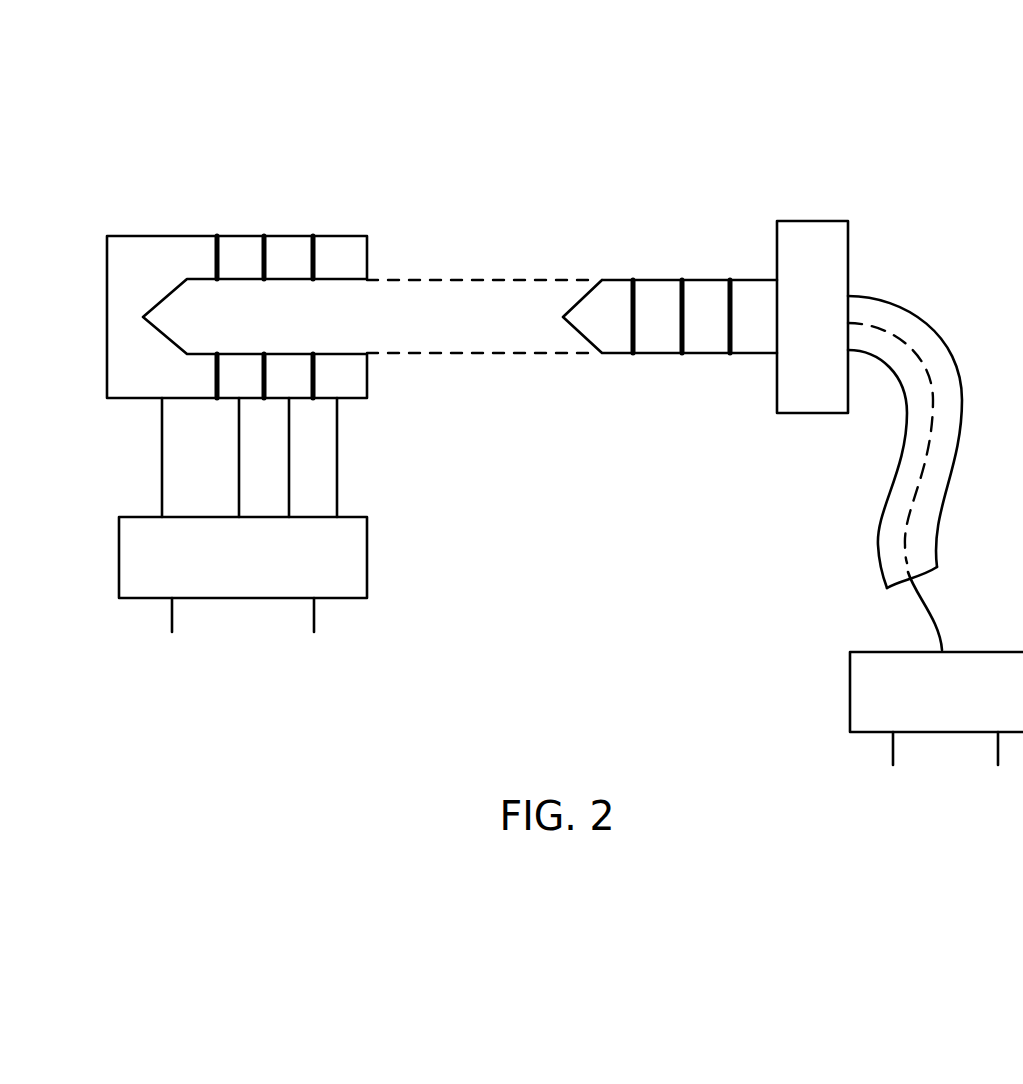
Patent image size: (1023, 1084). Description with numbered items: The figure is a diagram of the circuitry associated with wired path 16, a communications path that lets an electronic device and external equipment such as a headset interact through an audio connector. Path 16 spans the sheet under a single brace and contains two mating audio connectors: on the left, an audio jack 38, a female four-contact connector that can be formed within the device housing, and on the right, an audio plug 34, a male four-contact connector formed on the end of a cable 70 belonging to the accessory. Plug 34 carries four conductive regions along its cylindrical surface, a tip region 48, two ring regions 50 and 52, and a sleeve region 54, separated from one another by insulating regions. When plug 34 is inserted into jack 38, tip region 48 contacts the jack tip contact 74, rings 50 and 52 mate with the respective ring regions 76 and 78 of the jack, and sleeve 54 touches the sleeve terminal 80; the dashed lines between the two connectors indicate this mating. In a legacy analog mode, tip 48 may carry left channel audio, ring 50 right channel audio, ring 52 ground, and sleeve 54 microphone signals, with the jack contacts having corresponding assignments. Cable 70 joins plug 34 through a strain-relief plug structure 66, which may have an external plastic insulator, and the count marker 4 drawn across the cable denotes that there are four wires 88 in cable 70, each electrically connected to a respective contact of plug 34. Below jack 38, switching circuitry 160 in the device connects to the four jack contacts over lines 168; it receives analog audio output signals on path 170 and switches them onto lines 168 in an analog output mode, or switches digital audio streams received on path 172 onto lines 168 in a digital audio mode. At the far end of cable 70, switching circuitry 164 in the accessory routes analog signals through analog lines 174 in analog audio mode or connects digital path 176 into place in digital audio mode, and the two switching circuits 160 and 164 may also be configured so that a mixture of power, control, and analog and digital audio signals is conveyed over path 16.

The wired path 16 is at (105, 110).
The audio jack 38 is at (377, 185).
The audio plug 34 is at (852, 185).
The jack tip contact 74 is at (169, 243).
The ring region of jack 76 is at (240, 243).
The ring region of jack 78 is at (289, 243).
The sleeve terminal 80 is at (337, 243).
The tip region 48 is at (613, 288).
The ring region 50 is at (662, 288).
The ring region 52 is at (711, 288).
The sleeve region 54 is at (754, 288).
The strain-relief plug structure 66 is at (848, 252).
The cable 70 is at (890, 483).
The wires 88 is at (924, 486).
The number of conductors 4 is at (927, 622).
The switching circuitry 160 is at (367, 551).
The switching circuitry 164 is at (850, 683).
The lines 168 is at (239, 475).
The path 170 is at (172, 615).
The path 172 is at (314, 615).
The analog lines 174 is at (893, 748).
The digital path 176 is at (998, 748).